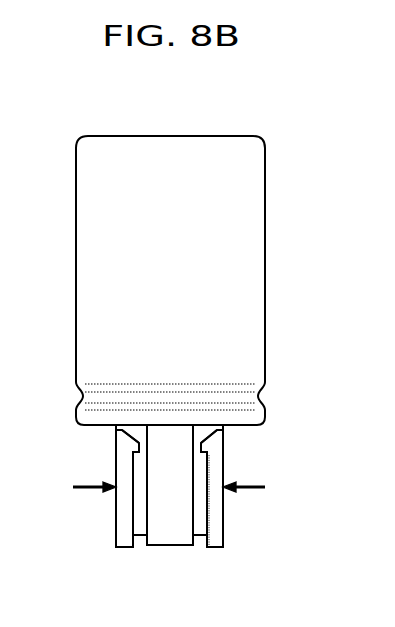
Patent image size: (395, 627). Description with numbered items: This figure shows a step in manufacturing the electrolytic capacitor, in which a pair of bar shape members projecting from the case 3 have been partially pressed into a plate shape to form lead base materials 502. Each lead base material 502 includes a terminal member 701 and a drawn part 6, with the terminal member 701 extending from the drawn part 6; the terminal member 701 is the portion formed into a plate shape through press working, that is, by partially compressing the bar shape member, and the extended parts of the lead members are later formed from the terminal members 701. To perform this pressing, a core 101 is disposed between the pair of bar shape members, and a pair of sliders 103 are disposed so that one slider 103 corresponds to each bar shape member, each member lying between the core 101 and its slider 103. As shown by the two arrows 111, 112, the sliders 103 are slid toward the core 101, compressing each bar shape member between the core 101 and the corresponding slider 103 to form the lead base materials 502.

The case 3 is at (183, 153).
The drawn part 6 is at (133, 432).
The core 101 is at (168, 535).
The slider 103 is at (122, 530).
The arrow 111 is at (86, 491).
The arrow 112 is at (260, 491).
The lead base material 502 is at (115, 432).
The terminal member 701 is at (143, 536).